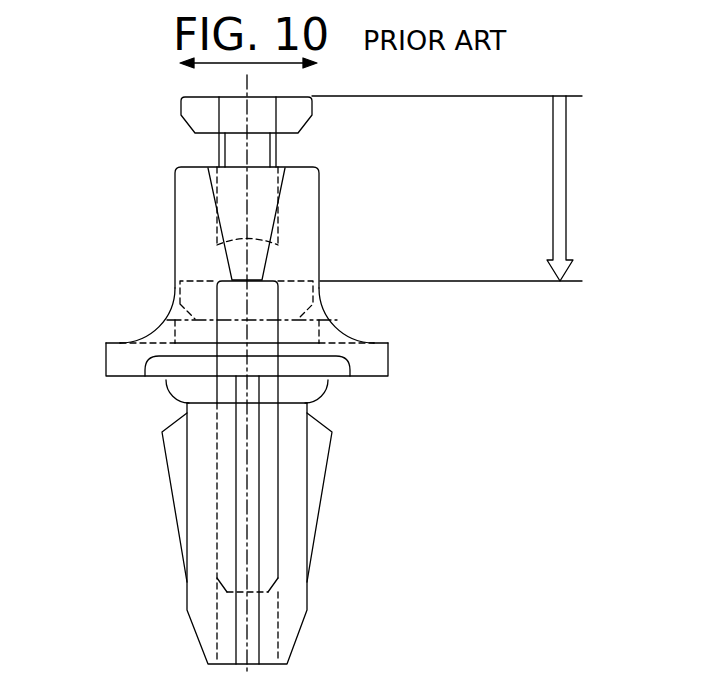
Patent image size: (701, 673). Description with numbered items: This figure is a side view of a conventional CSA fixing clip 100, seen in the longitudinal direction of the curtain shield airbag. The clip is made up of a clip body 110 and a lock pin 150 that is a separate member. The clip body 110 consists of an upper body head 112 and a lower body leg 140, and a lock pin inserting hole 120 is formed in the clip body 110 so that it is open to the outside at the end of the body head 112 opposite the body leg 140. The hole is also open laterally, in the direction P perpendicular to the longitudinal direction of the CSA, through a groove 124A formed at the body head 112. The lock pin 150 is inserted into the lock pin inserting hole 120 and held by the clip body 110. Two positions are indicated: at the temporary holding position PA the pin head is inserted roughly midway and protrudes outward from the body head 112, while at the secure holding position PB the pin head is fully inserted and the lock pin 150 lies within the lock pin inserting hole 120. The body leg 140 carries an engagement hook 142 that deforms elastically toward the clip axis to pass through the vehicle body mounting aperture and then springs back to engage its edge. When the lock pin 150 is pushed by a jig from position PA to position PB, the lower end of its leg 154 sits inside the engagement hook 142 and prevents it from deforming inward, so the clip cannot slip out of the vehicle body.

The CSA fixing clip 100 is at (103, 345).
The clip body 110 is at (360, 337).
The body head 112 is at (318, 186).
The lock pin inserting hole 120 is at (277, 337).
The groove 124A is at (245, 268).
The body leg 140 is at (307, 590).
The engagement hook 142 is at (168, 447).
The lock pin 150 is at (221, 96).
The leg 154 is at (277, 500).
The direction perpendicular to the longitudinal direction of the CSA P is at (258, 63).
The temporary holding position PA is at (463, 182).
The secure holding position PB is at (468, 282).